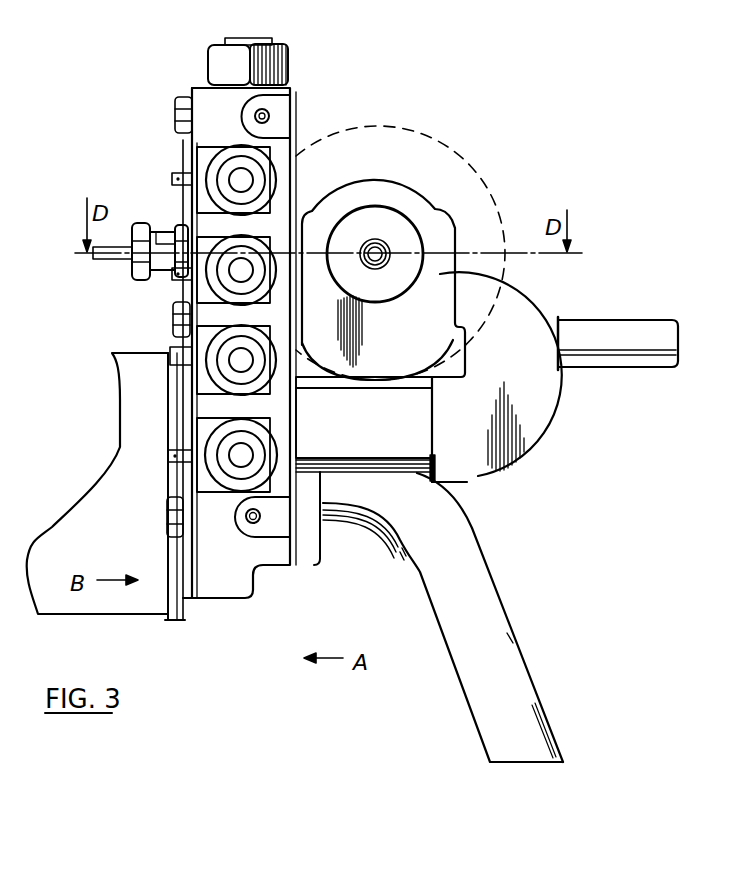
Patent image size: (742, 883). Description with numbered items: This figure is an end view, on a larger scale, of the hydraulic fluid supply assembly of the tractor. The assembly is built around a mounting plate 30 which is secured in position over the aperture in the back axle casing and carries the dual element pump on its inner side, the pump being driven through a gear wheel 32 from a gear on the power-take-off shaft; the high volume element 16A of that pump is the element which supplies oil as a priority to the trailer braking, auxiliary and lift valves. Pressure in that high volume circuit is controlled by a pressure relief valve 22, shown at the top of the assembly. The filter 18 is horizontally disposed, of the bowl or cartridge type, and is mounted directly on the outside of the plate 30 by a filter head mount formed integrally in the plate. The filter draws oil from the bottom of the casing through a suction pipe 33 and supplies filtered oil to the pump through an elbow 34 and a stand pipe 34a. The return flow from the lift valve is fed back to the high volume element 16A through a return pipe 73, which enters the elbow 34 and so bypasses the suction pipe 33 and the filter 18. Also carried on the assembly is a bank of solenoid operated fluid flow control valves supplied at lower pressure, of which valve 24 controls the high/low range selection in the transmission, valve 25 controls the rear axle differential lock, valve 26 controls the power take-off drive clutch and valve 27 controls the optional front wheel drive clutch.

The high volume element 16A is at (444, 284).
The filter 18 is at (92, 602).
The pressure relief valve 22 is at (288, 62).
The solenoid operated fluid flow control valve 24 is at (236, 453).
The solenoid operated fluid flow control valve 25 is at (236, 276).
The solenoid operated fluid flow control valve 26 is at (227, 172).
The solenoid operated fluid flow control valve 27 is at (240, 364).
The mounting plate 30 is at (240, 585).
The gear wheel 32 is at (452, 158).
The suction pipe 33 is at (495, 610).
The elbow 34 is at (530, 420).
The stand pipe 34a is at (413, 443).
The return pipe 73 is at (593, 357).